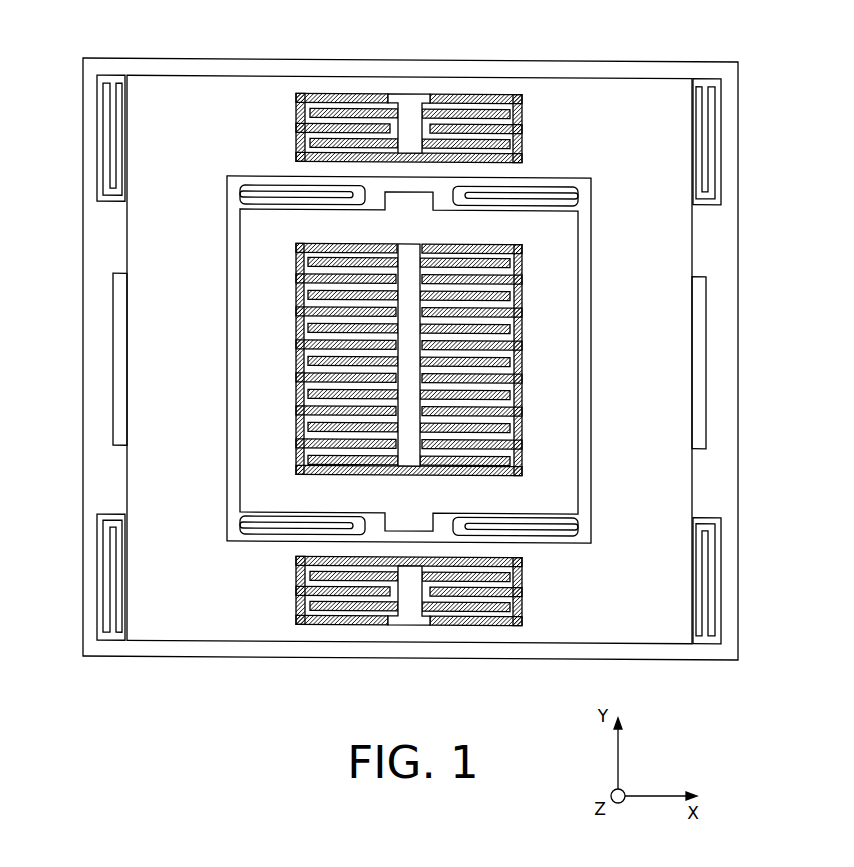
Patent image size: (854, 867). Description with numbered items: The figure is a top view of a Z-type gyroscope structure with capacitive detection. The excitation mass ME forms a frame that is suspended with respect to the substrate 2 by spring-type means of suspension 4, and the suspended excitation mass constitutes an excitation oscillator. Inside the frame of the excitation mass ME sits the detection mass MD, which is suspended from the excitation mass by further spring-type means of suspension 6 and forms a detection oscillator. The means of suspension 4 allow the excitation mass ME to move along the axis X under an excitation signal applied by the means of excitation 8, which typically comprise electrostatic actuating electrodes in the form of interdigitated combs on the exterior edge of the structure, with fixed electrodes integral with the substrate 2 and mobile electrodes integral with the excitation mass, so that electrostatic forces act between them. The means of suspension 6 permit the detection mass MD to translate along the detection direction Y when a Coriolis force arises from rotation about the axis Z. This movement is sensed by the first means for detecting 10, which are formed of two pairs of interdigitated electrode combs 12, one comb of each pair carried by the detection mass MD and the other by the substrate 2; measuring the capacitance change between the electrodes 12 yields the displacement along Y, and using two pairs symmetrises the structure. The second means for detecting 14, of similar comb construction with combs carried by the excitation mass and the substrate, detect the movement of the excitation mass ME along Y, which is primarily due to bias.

The substrate 2 is at (590, 72).
The means of suspension 4 is at (715, 135).
The means of suspension 6 is at (278, 534).
The means of excitation 8 is at (121, 331).
The first means for detecting 10 is at (410, 270).
The interdigitated electrode combs 12 is at (291, 426).
The second means for detecting 14 is at (408, 105).
The excitation mass ME is at (655, 261).
The detection mass MD is at (415, 349).